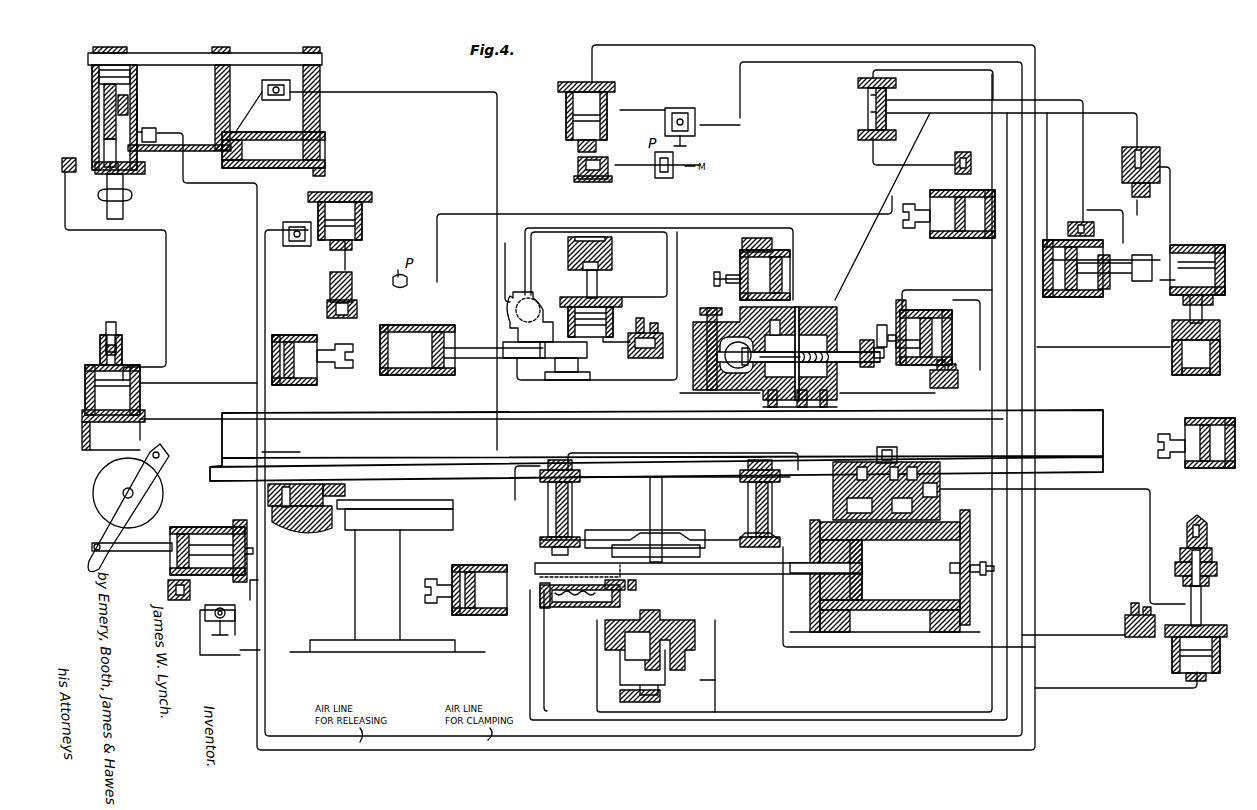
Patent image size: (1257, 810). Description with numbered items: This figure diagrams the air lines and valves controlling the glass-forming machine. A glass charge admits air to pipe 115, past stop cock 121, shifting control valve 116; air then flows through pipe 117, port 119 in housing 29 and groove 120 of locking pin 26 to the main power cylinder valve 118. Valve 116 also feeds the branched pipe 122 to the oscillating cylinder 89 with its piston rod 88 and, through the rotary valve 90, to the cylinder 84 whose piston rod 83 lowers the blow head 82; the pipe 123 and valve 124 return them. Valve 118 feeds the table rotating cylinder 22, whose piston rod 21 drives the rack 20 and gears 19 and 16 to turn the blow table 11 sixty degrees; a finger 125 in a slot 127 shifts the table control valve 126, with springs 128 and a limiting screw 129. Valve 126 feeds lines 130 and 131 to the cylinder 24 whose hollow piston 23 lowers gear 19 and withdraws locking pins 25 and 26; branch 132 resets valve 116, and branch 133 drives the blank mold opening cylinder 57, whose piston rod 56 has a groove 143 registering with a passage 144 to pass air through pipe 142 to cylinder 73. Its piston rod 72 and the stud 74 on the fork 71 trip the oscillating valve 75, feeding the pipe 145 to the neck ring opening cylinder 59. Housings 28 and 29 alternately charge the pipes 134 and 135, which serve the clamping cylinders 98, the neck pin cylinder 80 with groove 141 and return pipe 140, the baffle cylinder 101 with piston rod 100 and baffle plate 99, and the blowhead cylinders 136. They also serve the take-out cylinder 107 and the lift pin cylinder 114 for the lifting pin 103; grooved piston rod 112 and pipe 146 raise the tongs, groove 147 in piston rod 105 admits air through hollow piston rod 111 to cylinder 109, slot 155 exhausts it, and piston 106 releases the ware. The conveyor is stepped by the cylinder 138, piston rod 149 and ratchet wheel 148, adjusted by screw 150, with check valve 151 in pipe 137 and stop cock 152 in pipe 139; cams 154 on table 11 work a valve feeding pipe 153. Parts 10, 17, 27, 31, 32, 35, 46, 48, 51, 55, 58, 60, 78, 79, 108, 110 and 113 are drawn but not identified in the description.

The machine frame 10 is at (821, 435).
The blow table 11 is at (656, 445).
The gear 16 is at (616, 478).
The clamp rod 17 is at (662, 515).
The splined gear 19 is at (700, 551).
The rack 20 is at (752, 575).
The piston rod 21 is at (815, 585).
The table rotating cylinder 22 is at (885, 571).
The gear shifting piston 23 is at (660, 650).
The cylinder 24 is at (642, 678).
The locking pin 25 is at (748, 470).
The locking pin 26 is at (570, 470).
The lever 27 is at (640, 530).
The housing 28 is at (778, 503).
The housing 29 is at (595, 505).
The tool holder housing 31 is at (865, 285).
The base 32 is at (752, 392).
The bushing 35 is at (797, 308).
The ball 46 is at (735, 335).
The spindle 48 is at (795, 345).
The collar 51 is at (865, 362).
The lever 55 is at (877, 335).
The piston rod 56 is at (920, 365).
The blank mold opening cylinder 57 is at (916, 316).
The pipe 58 is at (855, 280).
The neck ring opening cylinder 59 is at (790, 272).
The plunger 60 is at (715, 280).
The fork 71 is at (556, 372).
The piston rod 72 is at (485, 372).
The cylinder 73 is at (412, 365).
The stud 74 is at (540, 362).
The oscillating valve 75 is at (540, 303).
The valve 78 is at (1205, 522).
The valve stem 79 is at (1201, 600).
The neck pin cylinder 80 is at (1210, 682).
The blow head 82 is at (328, 302).
The piston rod 83 is at (1202, 311).
The cylinder 84 is at (1222, 272).
The piston rod 88 is at (1130, 275).
The cylinder 89 is at (1087, 292).
The oscillating valve 90 is at (1160, 152).
The cylinders 98 is at (285, 385).
The baffle plate 99 is at (613, 252).
The piston rod 100 is at (600, 285).
The cylinder 101 is at (613, 324).
The lifting pin 103 is at (100, 320).
The piston rod 105 is at (105, 128).
The piston 106 is at (99, 78).
The cylinder 107 is at (128, 100).
The frame bar 108 is at (160, 57).
The cylinder 109 is at (312, 153).
The pipe 110 is at (240, 170).
The hollow piston rod 111 is at (200, 146).
The grooved piston rod 112 is at (125, 340).
The valve body 113 is at (86, 388).
The lift pin cylinder 114 is at (120, 406).
The pipe 115 is at (927, 165).
The control valve 116 is at (896, 84).
The pipe 117 is at (880, 190).
The main power cylinder valve 118 is at (915, 462).
The port 119 is at (548, 530).
The groove 120 is at (552, 550).
The stop cock 121 is at (968, 150).
The branched pipe 122 is at (1118, 118).
The pipe 123 is at (970, 95).
The valve 124 is at (1076, 222).
The finger 125 is at (640, 592).
The table control valve 126 is at (590, 612).
The slot 127 is at (628, 548).
The springs 128 is at (550, 612).
The adjustable screw 129 is at (950, 573).
The air line 130 is at (600, 685).
The air line 131 is at (716, 692).
The branch 132 is at (955, 62).
The branch 133 is at (960, 298).
The pipe 134 is at (262, 662).
The pipe 135 is at (262, 695).
The blowhead actuating cylinders 136 is at (370, 212).
The branch 137 is at (235, 650).
The cylinder 138 is at (208, 527).
The branch 139 is at (225, 600).
The pipe 140 is at (1068, 489).
The groove 141 is at (1212, 554).
The air pipe 142 is at (530, 214).
The groove 143 is at (890, 335).
The passage 144 is at (880, 358).
The pipe 145 is at (708, 262).
The pipe 146 is at (168, 305).
The groove 147 is at (130, 173).
The ratchet wheel 148 is at (155, 487).
The piston rod 149 is at (148, 551).
The screw 150 is at (230, 550).
The adjustable check valve 151 is at (215, 620).
The stop cock 152 is at (168, 590).
The pipe 153 is at (428, 90).
The cams 154 is at (362, 492).
The slot 155 is at (128, 105).